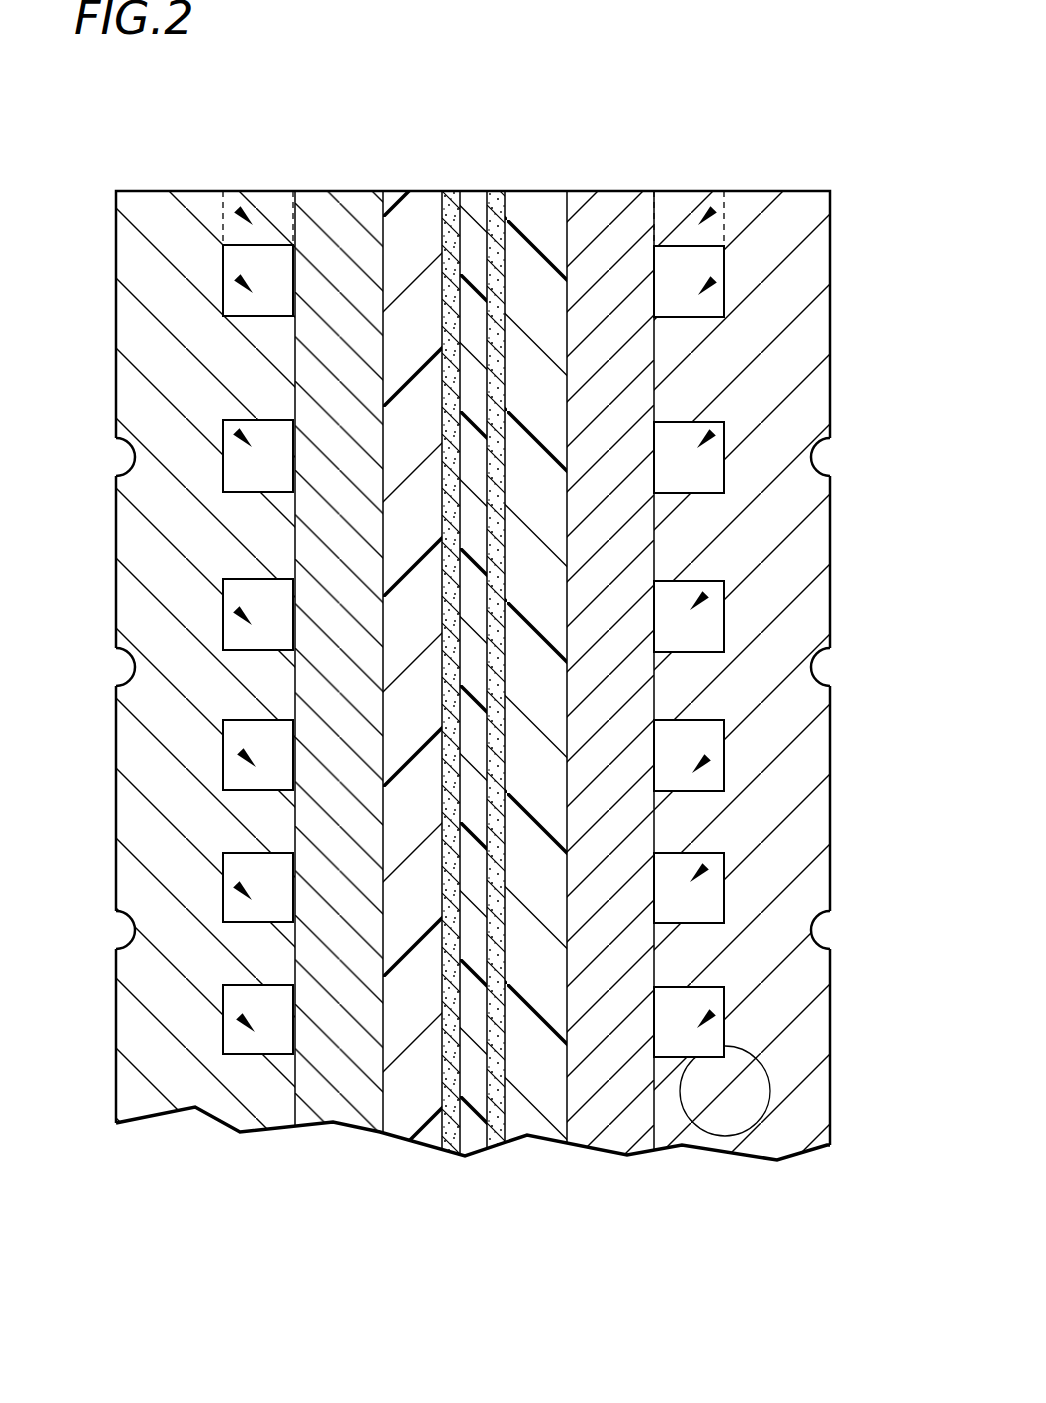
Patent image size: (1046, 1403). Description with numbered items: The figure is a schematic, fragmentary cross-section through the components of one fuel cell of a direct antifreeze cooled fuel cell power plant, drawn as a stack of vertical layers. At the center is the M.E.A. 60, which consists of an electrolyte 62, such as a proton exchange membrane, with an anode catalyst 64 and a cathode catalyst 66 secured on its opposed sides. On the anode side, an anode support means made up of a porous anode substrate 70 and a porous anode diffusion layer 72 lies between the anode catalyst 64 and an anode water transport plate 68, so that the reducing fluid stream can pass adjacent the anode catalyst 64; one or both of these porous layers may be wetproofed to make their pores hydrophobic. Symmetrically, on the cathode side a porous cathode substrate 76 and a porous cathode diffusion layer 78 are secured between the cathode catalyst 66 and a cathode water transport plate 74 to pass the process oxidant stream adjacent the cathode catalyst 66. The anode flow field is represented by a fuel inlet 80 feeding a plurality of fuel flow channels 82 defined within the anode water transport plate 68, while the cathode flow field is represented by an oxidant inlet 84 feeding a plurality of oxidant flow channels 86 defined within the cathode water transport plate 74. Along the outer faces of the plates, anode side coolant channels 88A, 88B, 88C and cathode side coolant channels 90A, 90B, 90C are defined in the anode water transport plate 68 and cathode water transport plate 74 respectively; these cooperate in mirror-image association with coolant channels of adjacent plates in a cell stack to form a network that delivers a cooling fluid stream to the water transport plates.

The M.E.A. 60 is at (443, 182).
The electrolyte 62 is at (470, 1150).
The anode catalyst 64 is at (457, 1150).
The cathode catalyst 66 is at (492, 1142).
The anode water transport plate 68 is at (218, 1103).
The porous anode substrate 70 is at (319, 1110).
The porous anode diffusion layer 72 is at (402, 1122).
The cathode water transport plate 74 is at (732, 1130).
The porous cathode substrate 76 is at (615, 1132).
The porous cathode diffusion layer 78 is at (535, 1128).
The fuel inlet 80 is at (240, 200).
The fuel flow channels 82 is at (237, 432).
The oxidant inlet 84 is at (711, 200).
The oxidant flow channels 86 is at (712, 433).
The anode side coolant channel 88A is at (108, 456).
The anode side coolant channel 88B is at (108, 666).
The anode side coolant channel 88C is at (108, 929).
The cathode side coolant channel 90A is at (838, 458).
The cathode side coolant channel 90B is at (838, 670).
The cathode side coolant channel 90C is at (838, 930).